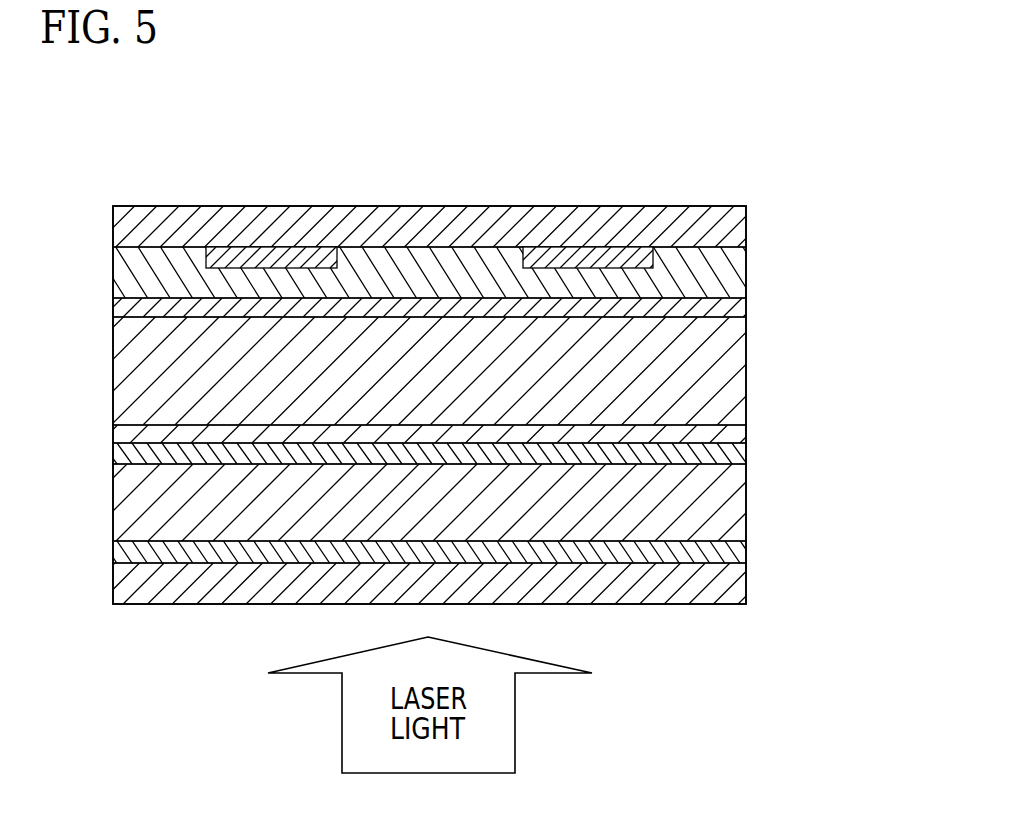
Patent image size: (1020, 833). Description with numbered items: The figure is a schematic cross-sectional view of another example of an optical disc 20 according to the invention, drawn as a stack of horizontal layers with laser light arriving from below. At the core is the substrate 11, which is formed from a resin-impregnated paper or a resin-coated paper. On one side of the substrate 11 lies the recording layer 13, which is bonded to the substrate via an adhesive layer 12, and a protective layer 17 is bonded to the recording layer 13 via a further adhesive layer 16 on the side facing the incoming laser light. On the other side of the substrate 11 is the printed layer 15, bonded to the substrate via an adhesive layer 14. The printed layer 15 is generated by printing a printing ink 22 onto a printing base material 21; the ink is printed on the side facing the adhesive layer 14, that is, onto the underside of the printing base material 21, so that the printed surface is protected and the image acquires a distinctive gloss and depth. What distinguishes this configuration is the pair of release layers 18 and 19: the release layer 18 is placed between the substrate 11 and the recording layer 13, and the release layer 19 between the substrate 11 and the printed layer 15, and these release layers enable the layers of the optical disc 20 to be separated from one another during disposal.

The optical disc 20 is at (462, 193).
The printed layer 15 is at (847, 182).
The printing base material 21 is at (746, 225).
The printing ink 22 is at (653, 263).
The adhesive layer 14 is at (746, 272).
The release layer 19 is at (746, 307).
The substrate 11 is at (746, 372).
The release layer 18 is at (746, 437).
The adhesive layer 12 is at (746, 453).
The recording layer 13 is at (746, 503).
The adhesive layer 16 is at (746, 553).
The protective layer 17 is at (746, 583).